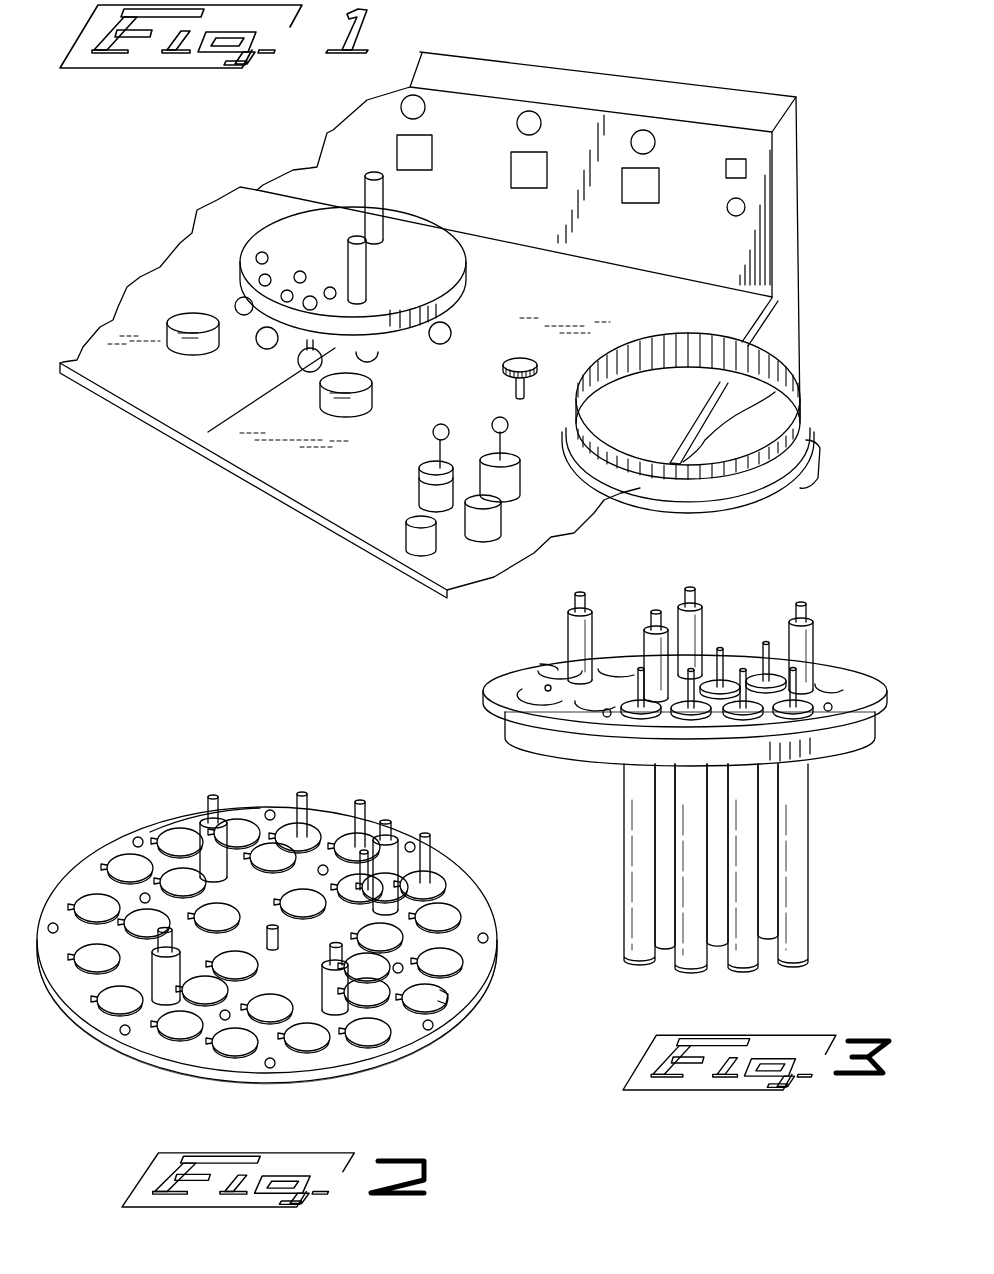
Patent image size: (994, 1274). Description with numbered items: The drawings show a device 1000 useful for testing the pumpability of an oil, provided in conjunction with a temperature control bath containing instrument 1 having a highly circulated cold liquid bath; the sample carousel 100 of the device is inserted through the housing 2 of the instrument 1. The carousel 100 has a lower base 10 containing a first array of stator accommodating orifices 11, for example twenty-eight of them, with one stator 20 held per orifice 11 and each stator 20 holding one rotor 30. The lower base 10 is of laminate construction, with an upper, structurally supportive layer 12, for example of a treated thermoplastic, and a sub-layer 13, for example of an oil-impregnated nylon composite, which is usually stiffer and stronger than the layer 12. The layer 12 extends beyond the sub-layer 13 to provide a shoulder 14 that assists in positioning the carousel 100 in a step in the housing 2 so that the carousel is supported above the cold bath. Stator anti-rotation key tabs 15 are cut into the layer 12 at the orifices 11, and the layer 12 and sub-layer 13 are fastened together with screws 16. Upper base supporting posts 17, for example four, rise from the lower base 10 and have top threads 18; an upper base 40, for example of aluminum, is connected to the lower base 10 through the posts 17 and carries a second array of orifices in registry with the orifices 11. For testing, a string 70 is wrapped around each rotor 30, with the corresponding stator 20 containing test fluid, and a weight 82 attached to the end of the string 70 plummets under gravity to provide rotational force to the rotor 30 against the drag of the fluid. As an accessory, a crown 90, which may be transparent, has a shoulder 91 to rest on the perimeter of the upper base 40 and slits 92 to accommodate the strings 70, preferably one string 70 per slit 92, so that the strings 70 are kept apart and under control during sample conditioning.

In FIG. 1, the device 1000 is at (631, 44).
In FIG. 1, the instrument 1 is at (803, 280).
In FIG. 1, the housing 2 is at (790, 328).
In FIG. 1, the lower base 10 is at (243, 300).
In FIG. 2, the lower base 10 is at (102, 790).
In FIG. 3, the lower base 10 is at (778, 594).
In FIG. 2, the stator accommodating orifices 11 is at (115, 868).
In FIG. 2, the upper structurally supportive layer 12 is at (150, 832).
In FIG. 3, the upper structurally supportive layer 12 is at (583, 720).
In FIG. 2, the sub-layer 13 is at (283, 1080).
In FIG. 3, the sub-layer 13 is at (613, 747).
In FIG. 3, the shoulder 14 is at (872, 720).
In FIG. 2, the stator anti-rotation key tabs 15 is at (396, 1063).
In FIG. 2, the screws 16 is at (127, 1034).
In FIG. 2, the upper base supporting posts 17 is at (221, 823).
In FIG. 3, the upper base supporting posts 17 is at (670, 622).
In FIG. 2, the top threads 18 is at (206, 794).
In FIG. 3, the top threads 18 is at (703, 593).
In FIG. 3, the stators 20 is at (641, 941).
In FIG. 1, the rotor 30 is at (358, 355).
In FIG. 2, the rotor 30 is at (360, 805).
In FIG. 3, the rotor 30 is at (771, 643).
In FIG. 1, the upper base 40 is at (431, 291).
In FIG. 1, the string 70 is at (238, 406).
In FIG. 1, the weight 82 is at (407, 522).
In FIG. 1, the crown 90 is at (683, 350).
In FIG. 1, the shoulder 91 is at (788, 444).
In FIG. 1, the slits 92 is at (760, 352).
In FIG. 1, the sample carousel 100 is at (482, 318).
In FIG. 3, the sample carousel 100 is at (606, 852).